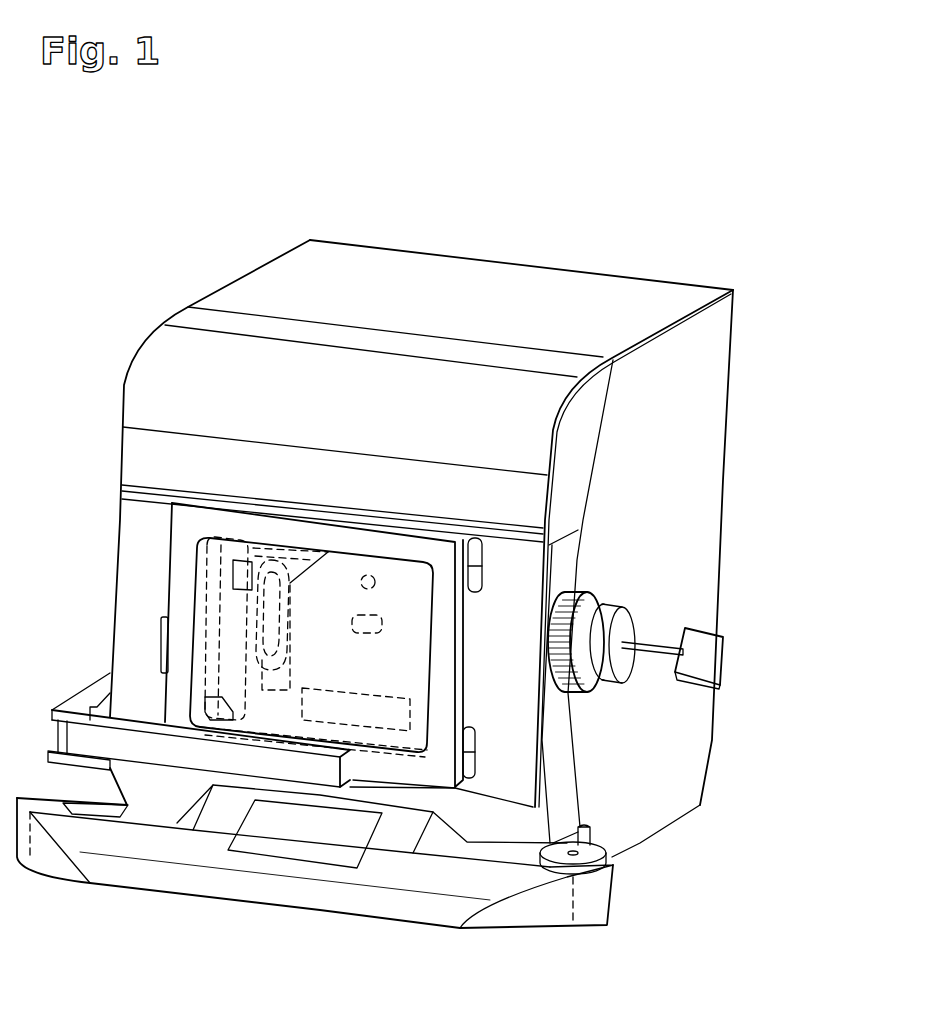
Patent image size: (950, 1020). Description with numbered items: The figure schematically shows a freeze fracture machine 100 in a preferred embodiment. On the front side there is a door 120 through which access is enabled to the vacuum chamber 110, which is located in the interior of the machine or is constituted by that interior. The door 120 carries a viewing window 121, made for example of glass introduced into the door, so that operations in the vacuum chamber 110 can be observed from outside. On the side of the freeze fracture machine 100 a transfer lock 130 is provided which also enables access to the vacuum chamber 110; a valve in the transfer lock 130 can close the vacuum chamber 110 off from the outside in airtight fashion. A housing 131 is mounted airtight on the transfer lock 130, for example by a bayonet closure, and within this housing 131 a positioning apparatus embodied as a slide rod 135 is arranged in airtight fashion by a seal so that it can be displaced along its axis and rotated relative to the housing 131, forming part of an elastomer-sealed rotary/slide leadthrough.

The freeze fracture machine 100 is at (745, 217).
The vacuum chamber 110 is at (319, 652).
The door 120 is at (178, 590).
The viewing window 121 is at (347, 572).
The transfer lock 130 is at (578, 592).
The housing 131 is at (627, 627).
The slide rod 135 is at (653, 652).